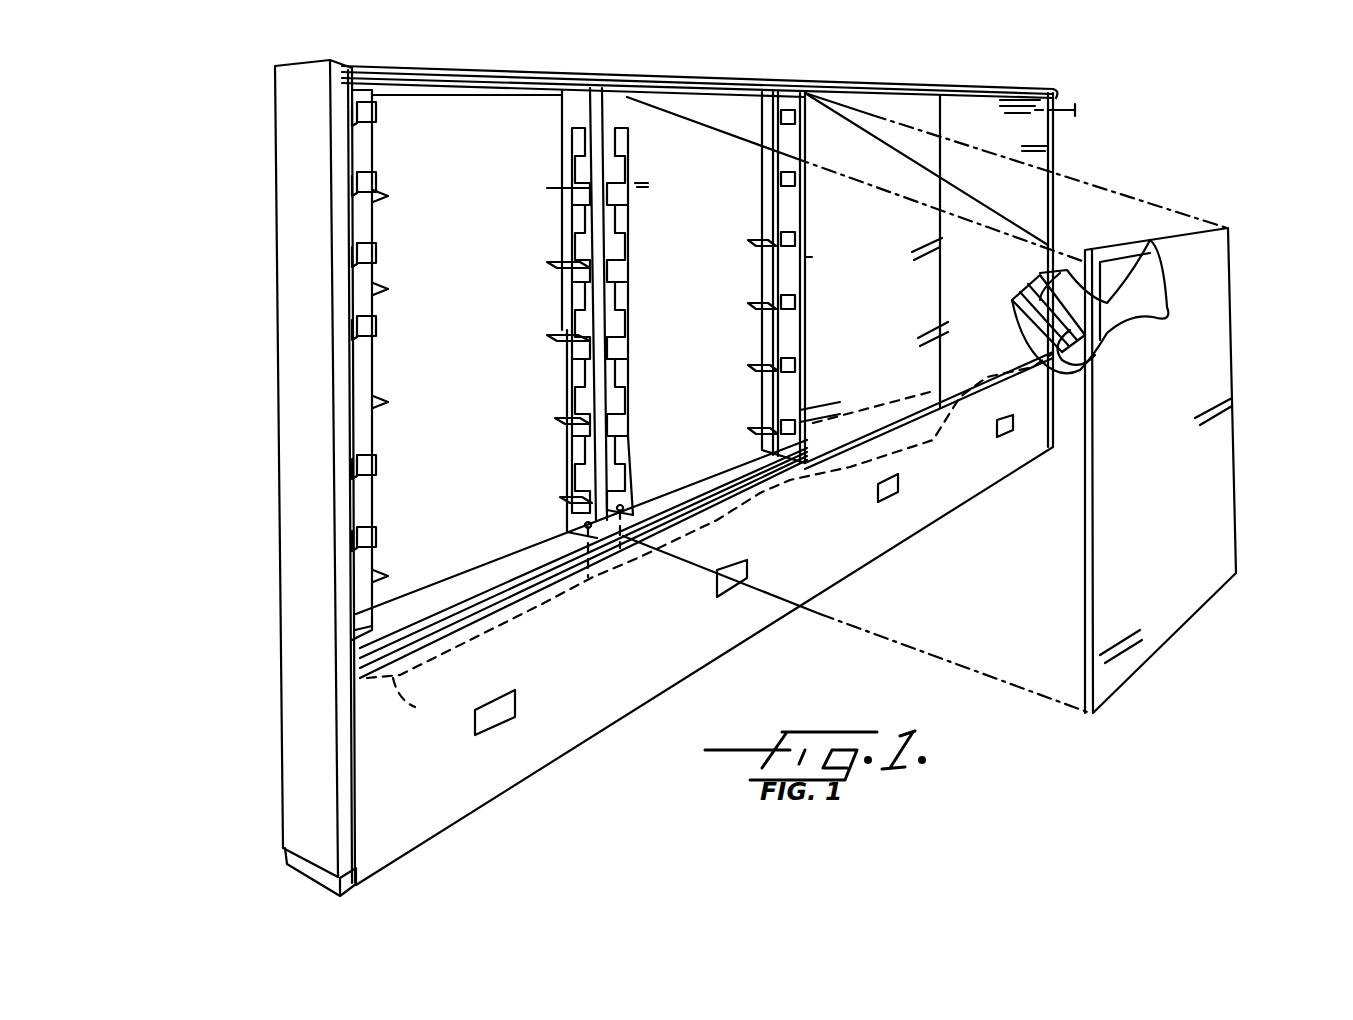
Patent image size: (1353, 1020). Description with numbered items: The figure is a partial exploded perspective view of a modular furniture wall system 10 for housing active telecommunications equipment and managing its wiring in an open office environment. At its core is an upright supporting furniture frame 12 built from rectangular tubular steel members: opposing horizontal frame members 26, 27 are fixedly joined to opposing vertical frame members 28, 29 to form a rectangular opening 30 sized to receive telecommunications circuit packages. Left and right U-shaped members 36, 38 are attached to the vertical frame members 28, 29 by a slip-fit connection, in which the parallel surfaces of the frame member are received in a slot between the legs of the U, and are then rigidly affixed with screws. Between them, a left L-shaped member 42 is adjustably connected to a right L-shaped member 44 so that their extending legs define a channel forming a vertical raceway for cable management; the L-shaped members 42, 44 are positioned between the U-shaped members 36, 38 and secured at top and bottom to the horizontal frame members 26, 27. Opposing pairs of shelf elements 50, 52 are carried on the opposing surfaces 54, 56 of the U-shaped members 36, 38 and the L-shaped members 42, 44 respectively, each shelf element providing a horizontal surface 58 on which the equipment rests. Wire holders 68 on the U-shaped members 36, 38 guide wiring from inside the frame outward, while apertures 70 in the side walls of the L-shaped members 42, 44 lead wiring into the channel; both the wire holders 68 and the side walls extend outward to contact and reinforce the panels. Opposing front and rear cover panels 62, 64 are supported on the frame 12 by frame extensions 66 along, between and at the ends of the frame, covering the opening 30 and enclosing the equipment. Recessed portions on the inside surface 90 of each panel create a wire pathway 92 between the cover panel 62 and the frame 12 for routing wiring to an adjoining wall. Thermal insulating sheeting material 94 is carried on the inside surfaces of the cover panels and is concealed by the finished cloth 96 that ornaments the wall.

The modular furniture wall system 10 is at (830, 75).
The furniture frame 12 is at (232, 78).
The horizontal frame member 26 is at (452, 580).
The horizontal frame member 27 is at (444, 82).
The vertical frame member 28 is at (350, 303).
The vertical frame member 29 is at (808, 258).
The opening 30 is at (417, 373).
The left U-shaped member 36 is at (383, 157).
The right U-shaped member 38 is at (745, 210).
The left L-shaped member 42 is at (548, 136).
The right L-shaped member 44 is at (620, 152).
The shelf element 50 is at (393, 193).
The shelf element 52 is at (537, 190).
The opposing surface 54 is at (380, 517).
The opposing surface 56 is at (573, 462).
The horizontal surface 58 is at (553, 333).
The front cover panel 62 is at (995, 287).
The rear cover panel 64 is at (485, 242).
The frame extension 66 is at (297, 187).
The wire holder 68 is at (367, 340).
The aperture 70 is at (630, 447).
The inside surface 90 is at (1087, 360).
The wire pathway 92 is at (1053, 347).
The thermal insulating sheeting material 94 is at (360, 627).
The finished cloth 96 is at (1163, 303).